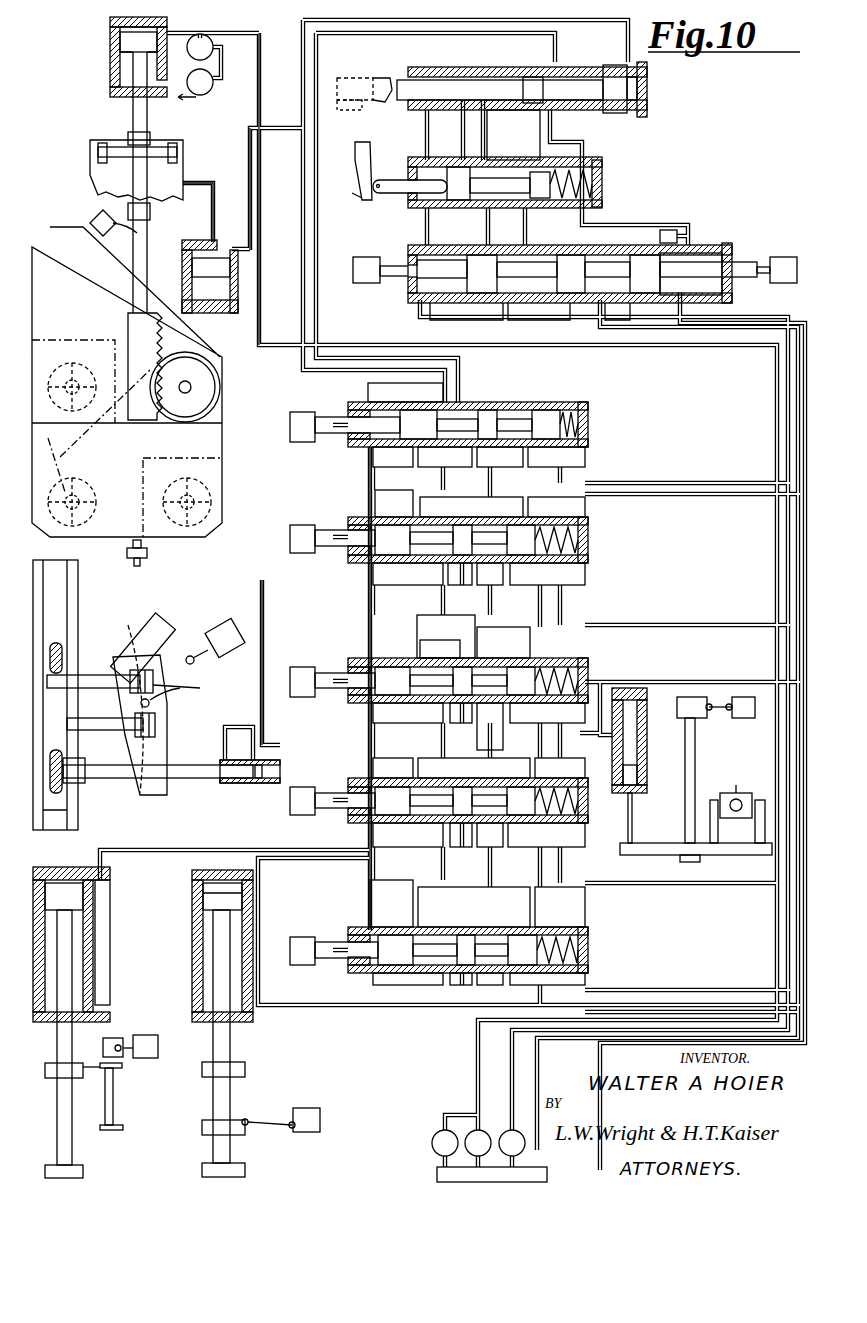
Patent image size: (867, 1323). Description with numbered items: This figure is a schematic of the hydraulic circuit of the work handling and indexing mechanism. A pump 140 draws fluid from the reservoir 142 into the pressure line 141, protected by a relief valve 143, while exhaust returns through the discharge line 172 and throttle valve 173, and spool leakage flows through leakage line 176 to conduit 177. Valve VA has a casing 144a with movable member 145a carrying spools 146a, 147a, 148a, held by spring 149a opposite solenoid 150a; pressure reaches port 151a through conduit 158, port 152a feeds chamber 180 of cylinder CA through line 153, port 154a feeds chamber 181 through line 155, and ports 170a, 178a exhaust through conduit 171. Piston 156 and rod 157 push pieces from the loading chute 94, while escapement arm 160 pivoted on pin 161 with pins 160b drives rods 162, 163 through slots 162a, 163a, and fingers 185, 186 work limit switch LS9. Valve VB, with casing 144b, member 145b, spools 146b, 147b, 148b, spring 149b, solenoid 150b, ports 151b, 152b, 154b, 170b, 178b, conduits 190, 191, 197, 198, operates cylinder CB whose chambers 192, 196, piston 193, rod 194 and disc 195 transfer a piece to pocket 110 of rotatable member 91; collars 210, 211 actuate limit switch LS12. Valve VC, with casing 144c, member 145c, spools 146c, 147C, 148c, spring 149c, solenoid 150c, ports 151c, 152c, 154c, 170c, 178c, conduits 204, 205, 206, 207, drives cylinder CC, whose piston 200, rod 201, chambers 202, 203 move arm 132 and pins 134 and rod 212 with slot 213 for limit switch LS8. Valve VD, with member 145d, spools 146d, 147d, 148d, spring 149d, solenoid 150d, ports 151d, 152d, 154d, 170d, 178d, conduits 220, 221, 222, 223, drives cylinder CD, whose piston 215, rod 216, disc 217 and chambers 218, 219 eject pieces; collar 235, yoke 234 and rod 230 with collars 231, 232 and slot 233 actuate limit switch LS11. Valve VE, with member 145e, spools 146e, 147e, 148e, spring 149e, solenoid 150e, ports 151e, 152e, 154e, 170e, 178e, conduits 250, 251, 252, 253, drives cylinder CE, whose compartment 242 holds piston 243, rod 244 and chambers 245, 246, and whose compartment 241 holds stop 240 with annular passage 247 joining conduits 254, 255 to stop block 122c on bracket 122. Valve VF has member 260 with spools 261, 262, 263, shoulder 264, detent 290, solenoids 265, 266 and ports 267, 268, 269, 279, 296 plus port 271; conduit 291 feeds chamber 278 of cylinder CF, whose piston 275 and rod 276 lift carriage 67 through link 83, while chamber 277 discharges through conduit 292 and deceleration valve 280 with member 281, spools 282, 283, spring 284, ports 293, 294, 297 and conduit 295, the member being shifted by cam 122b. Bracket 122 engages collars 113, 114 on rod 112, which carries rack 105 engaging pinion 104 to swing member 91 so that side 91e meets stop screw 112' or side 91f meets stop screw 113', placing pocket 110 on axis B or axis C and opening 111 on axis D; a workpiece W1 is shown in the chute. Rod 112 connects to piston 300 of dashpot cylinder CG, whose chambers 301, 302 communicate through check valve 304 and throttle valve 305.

The cylinder head 301 is at (122, 28).
The piston 300 is at (122, 40).
The piston rod seal 302 is at (122, 60).
The cylinder CG is at (108, 86).
The valve VT 305 is at (203, 35).
The valve VC 304 is at (206, 90).
The conduit 252 is at (300, 22).
The conduit 292 is at (250, 130).
The rod 113 is at (129, 182).
The cross bar 122 is at (100, 150).
The housing 67 is at (180, 140).
The conduit 83 is at (188, 185).
The slide block 114 is at (128, 206).
The cam follower 112 is at (99, 216).
The rod 113' is at (55, 209).
The port 276 is at (213, 210).
The cylinder head 277 is at (205, 245).
The piston 275 is at (195, 266).
The cylinder CF is at (182, 287).
The cylinder end 278 is at (205, 312).
The conduit 291 is at (265, 350).
The frame portion 91f is at (120, 275).
The frame 91 is at (127, 382).
The rack 105 is at (128, 320).
The gear 104 is at (205, 378).
The station C is at (68, 387).
The station D is at (75, 502).
The station B is at (181, 502).
The spindle 110 is at (205, 495).
The axis line 111 is at (60, 455).
The stop 112' is at (123, 552).
The frame portion 91e is at (165, 540).
The cylinder CE is at (650, 112).
The cylinder end wall 242 is at (648, 74).
The piston 245 is at (647, 97).
The piston rod 241 is at (418, 78).
The cylinder wall 247 is at (472, 78).
The piston 246 is at (608, 78).
The collar 244 is at (555, 112).
The collar 243 is at (603, 112).
The cam block 240 is at (375, 78).
The cross bar 122c is at (349, 116).
The port 255 is at (446, 122).
The port 254 is at (485, 120).
The port 293 is at (470, 160).
The port 297 is at (500, 160).
The valve 280 is at (617, 167).
The spring end 284 is at (603, 184).
The lever 283 is at (447, 184).
The valve land 282 is at (531, 181).
The valve stem 281 is at (500, 188).
The cam 122b is at (359, 181).
The port 294 is at (454, 222).
The port 295 is at (500, 226).
The valve land 261 is at (478, 255).
The port 296 is at (504, 237).
The valve land 262 is at (565, 255).
The solenoid 264 is at (660, 236).
The conduit 290 is at (688, 240).
The valve VF is at (727, 243).
The solenoid 266 is at (778, 257).
The solenoid 265 is at (370, 257).
The valve spool 260 is at (570, 274).
The valve land 263 is at (630, 275).
The port 271 is at (420, 305).
The port 269 is at (466, 306).
The port 267 is at (539, 306).
The port 268 is at (622, 308).
The conduit 279 is at (598, 330).
The valve VE is at (590, 443).
The solenoid 150e is at (290, 425).
The valve land 146e is at (352, 417).
The port 154e is at (405, 393).
The valve stem 145e is at (455, 410).
The valve land 152e is at (518, 410).
The valve land 148e is at (562, 395).
The spring 149e is at (590, 425).
The port 170e is at (393, 458).
The port 151e is at (455, 440).
The port 147e is at (490, 440).
The port 178e is at (545, 440).
The conduit 251 is at (380, 355).
The conduit 250 is at (662, 482).
The conduit 253 is at (735, 493).
The conduit 171 is at (718, 490).
The valve VA is at (590, 566).
The solenoid 150a is at (290, 540).
The valve land 146a is at (352, 530).
The port 170a is at (405, 517).
The port 147a is at (460, 525).
The port 178a is at (515, 525).
The valve land 148a is at (507, 543).
The spring 149a is at (590, 548).
The valve stem 145a is at (370, 548).
The valve body 144a is at (365, 563).
The port 154a is at (422, 577).
The port 151a is at (490, 570).
The valve land 152a is at (535, 565).
The conduit / cushion 158 is at (698, 600).
The conduit 155 is at (260, 590).
The conduit 207 is at (685, 618).
The conduit 204 is at (690, 630).
The valve VC is at (590, 660).
The solenoid 150c is at (300, 667).
The conduit 153 is at (299, 620).
The valve stem 145c is at (390, 680).
The port 151c is at (475, 655).
The port 170c is at (440, 650).
The port 178c is at (518, 660).
The spring 149c is at (590, 665).
The valve land 148c is at (507, 685).
The valve land 146c is at (375, 690).
The port 154c is at (438, 703).
The port 147C is at (465, 703).
The port 152c is at (525, 703).
The valve body 144c is at (365, 705).
The conduit 206 is at (480, 730).
The conduit 223 is at (420, 743).
The conduit 181 is at (300, 735).
The valve VD is at (590, 818).
The solenoid 150d is at (290, 805).
The valve land 146d is at (375, 795).
The port 170d is at (392, 766).
The port 147d is at (462, 787).
The port 178d is at (538, 768).
The spring 149d is at (580, 825).
The valve stem 145d is at (395, 815).
The port 154d is at (440, 823).
The port 152d is at (525, 830).
The port 151d is at (490, 835).
The valve land 148d is at (565, 823).
The cylinder CC is at (640, 712).
The bracket 202 is at (680, 695).
The link 213 is at (712, 705).
The limit switch LS8 is at (740, 714).
The piston 205 is at (630, 728).
The piston rod 200 is at (632, 770).
The rod 212 is at (697, 748).
The port 203 is at (648, 785).
The base plate 201 is at (635, 835).
The clamp 134 is at (715, 825).
The workpiece W1 is at (72, 760).
The support 132 is at (715, 858).
The column 94 is at (78, 592).
The arm 186 is at (138, 632).
The limit switch LS9 is at (212, 625).
The bar 162a is at (133, 640).
The cam plate 163 is at (88, 680).
The cam track 163a is at (138, 795).
The link 185 is at (205, 665).
The lever arm 160b is at (200, 688).
The pivot 161 is at (165, 703).
The slide 160 is at (165, 723).
The bar 162 is at (85, 725).
The cylinder 180 is at (228, 757).
The cylinder CA is at (220, 790).
The piston 156 is at (235, 786).
The piston rod 157 is at (170, 800).
The cylinder end 218 is at (65, 862).
The port 215 is at (83, 865).
The conduit 222 is at (198, 848).
The cylinder CD is at (57, 877).
The piston rod 216 is at (72, 1148).
The foot 217 is at (83, 1170).
The crosshead 235 is at (75, 1068).
The actuator 233 is at (120, 1040).
The limit switch LS11 is at (158, 1043).
The arm 231 is at (122, 1065).
The arm 234 is at (120, 1068).
The rod 230 is at (113, 1098).
The foot 232 is at (123, 1128).
The cylinder CB is at (192, 933).
The piston 196 is at (210, 890).
The piston seal 193 is at (210, 898).
The cylinder wall 192 is at (200, 918).
The piston rod 194 is at (220, 950).
The port 219 is at (80, 975).
The crosshead 210 is at (245, 1070).
The actuator arm 211 is at (245, 1128).
The foot 195 is at (245, 1170).
The limit switch LS12 is at (306, 1108).
The conduit 191 is at (282, 1012).
The port 197 is at (262, 890).
The conduit 221 is at (268, 872).
The valve VB is at (590, 940).
The solenoid 150b is at (300, 937).
The port 198 is at (415, 893).
The port 170b is at (413, 927).
The port 147b is at (474, 907).
The valve stem 145b is at (470, 925).
The port 178b is at (525, 927).
The spring 149b is at (590, 953).
The valve body 144b is at (348, 972).
The valve land 146b is at (393, 965).
The port 154b is at (440, 973).
The port 151b is at (475, 973).
The valve land 152b is at (520, 973).
The valve land 148b is at (560, 973).
The conduit 220 is at (688, 898).
The conduit 190 is at (692, 998).
The exhaust conduit 176 is at (427, 122).
The reservoir 142 is at (437, 1176).
The relief valve 143 is at (432, 1143).
The pump 140 is at (470, 1130).
The conduit 172 is at (508, 1062).
The pressure conduit 141 is at (478, 1045).
The conduit 177 is at (538, 1055).
The return conduit 173 is at (548, 1170).